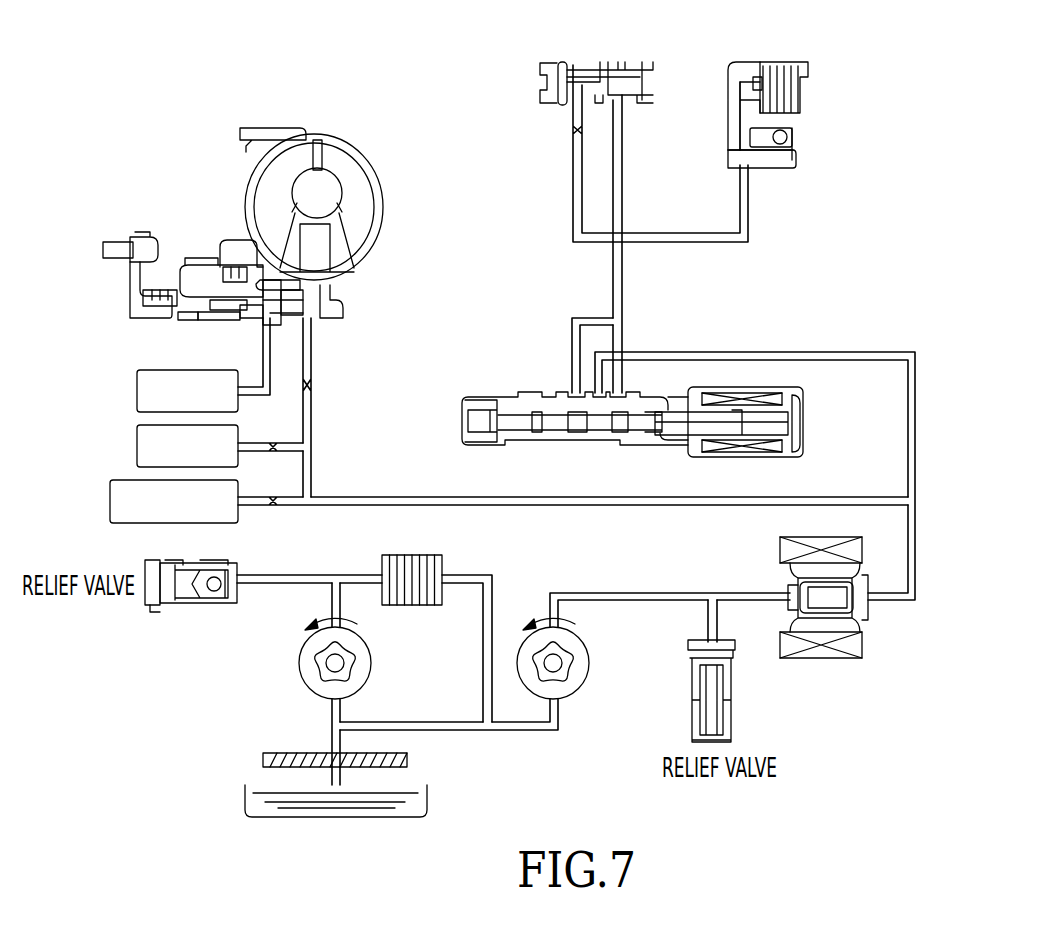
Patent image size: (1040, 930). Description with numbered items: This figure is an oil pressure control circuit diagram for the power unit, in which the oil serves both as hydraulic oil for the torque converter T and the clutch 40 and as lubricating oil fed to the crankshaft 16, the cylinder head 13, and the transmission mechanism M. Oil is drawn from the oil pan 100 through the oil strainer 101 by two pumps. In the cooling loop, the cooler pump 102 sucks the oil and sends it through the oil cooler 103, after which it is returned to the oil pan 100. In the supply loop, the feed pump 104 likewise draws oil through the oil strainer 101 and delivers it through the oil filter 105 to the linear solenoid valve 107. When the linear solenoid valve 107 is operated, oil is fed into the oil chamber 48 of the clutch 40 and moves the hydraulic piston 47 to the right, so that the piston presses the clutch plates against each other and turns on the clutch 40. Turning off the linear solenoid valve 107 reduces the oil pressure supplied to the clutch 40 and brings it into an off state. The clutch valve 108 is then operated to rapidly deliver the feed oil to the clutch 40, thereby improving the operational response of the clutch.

The torque converter T is at (243, 203).
The crankshaft 16 is at (137, 394).
The cylinder head 13 is at (137, 449).
The transmission mechanism M is at (110, 503).
The clutch valve 108 is at (583, 62).
The clutch 40 is at (780, 94).
The hydraulic piston 47 is at (743, 82).
The oil chamber 48 is at (740, 162).
The linear solenoid valve 107 is at (632, 439).
The oil cooler 103 is at (425, 561).
The cooler pump 102 is at (243, 658).
The feed pump 104 is at (586, 654).
The oil filter 105 is at (904, 602).
The oil strainer 101 is at (277, 742).
The oil pan 100 is at (336, 821).